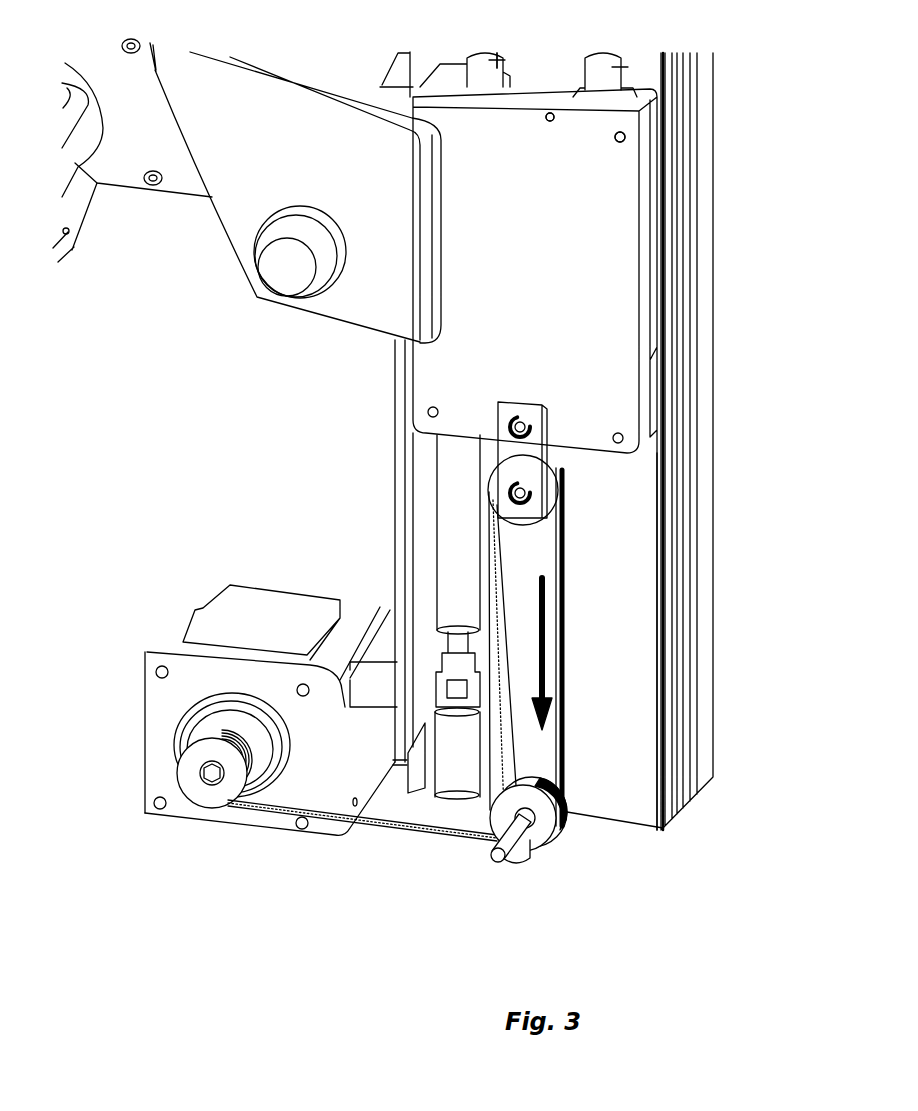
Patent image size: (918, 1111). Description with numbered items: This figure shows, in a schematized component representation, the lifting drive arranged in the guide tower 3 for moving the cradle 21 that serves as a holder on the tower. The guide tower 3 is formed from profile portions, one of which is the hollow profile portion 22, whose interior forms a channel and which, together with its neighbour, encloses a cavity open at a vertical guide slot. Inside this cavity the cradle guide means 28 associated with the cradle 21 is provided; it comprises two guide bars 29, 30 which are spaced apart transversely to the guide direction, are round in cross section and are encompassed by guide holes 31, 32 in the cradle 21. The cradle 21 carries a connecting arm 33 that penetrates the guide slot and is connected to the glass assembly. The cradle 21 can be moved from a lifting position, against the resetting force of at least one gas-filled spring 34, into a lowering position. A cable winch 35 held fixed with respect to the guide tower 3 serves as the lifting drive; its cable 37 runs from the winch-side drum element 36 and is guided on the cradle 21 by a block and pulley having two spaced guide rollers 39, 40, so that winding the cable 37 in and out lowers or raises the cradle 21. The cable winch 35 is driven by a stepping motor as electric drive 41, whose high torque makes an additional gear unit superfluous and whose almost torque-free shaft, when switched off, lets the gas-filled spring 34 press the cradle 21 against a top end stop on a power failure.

The guide tower 3 is at (749, 194).
The cradle 21 is at (553, 311).
The profile portion 22 is at (707, 82).
The cradle guide means 28 is at (561, 152).
The guide bar 29 is at (618, 72).
The guide bar 30 is at (513, 86).
The guide hole 31 is at (625, 108).
The guide hole 32 is at (550, 108).
The connecting arm 33 is at (343, 181).
The gas-filled spring 34 is at (473, 553).
The cable winch 35 is at (650, 609).
The drive pulley 36 is at (230, 793).
The cable 37 is at (572, 611).
The guide roller 39 is at (558, 480).
The guide roller 40 is at (543, 837).
The electric drive 41 is at (290, 620).